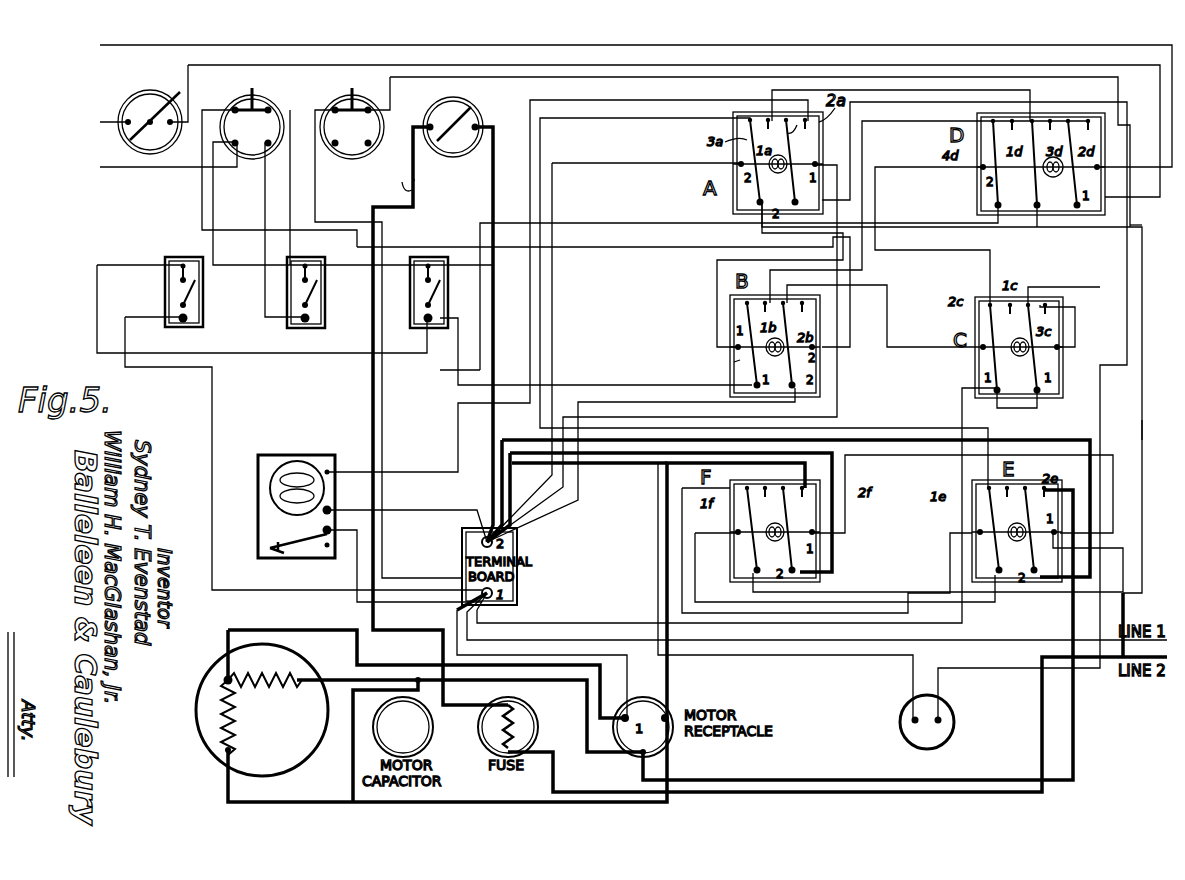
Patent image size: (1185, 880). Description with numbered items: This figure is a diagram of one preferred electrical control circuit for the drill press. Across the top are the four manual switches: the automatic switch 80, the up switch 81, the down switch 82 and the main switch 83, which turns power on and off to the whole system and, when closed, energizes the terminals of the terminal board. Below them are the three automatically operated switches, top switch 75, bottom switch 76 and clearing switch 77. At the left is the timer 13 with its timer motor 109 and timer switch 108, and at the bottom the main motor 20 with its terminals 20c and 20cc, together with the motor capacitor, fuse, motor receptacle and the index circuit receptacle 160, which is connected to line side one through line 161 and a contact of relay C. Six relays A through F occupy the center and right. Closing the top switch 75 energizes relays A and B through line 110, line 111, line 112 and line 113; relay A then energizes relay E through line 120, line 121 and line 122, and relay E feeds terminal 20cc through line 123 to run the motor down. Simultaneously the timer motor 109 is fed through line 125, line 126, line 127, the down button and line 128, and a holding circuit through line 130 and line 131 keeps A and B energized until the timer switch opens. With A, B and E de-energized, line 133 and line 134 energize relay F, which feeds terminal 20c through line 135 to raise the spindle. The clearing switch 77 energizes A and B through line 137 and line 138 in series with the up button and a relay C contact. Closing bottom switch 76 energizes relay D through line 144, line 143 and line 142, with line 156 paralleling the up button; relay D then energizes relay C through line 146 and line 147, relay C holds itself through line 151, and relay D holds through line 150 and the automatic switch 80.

The timer 13 is at (277, 511).
The main motor 20 is at (270, 709).
The motor terminal 20c is at (235, 750).
The motor terminal 20cc is at (300, 655).
The top switch 75 is at (169, 282).
The bottom switch 76 is at (316, 283).
The clearing switch 77 is at (430, 283).
The automatic switch 80 is at (143, 109).
The up switch 81 is at (241, 113).
The down switch 82 is at (341, 113).
The main switch 83 is at (486, 95).
The timer switch 108 is at (276, 556).
The timer motor 109 is at (272, 490).
The line 110 is at (294, 380).
The line 111 is at (636, 386).
The line 112 is at (734, 358).
The line 113 is at (710, 306).
The line 120 is at (1020, 90).
The line 121 is at (1058, 227).
The line 122 is at (914, 598).
The line 123 is at (1080, 732).
The line 125 is at (442, 456).
The line 126 is at (852, 154).
The line 127 is at (1126, 186).
The line 128 is at (388, 560).
The line 130 is at (916, 206).
The line 131 is at (811, 284).
The line 133 is at (915, 414).
The line 134 is at (980, 624).
The line 135 is at (548, 800).
The line 137 is at (960, 236).
The line 138 is at (362, 276).
The line 142 is at (1156, 156).
The line 143 is at (156, 167).
The line 144 is at (254, 270).
The line 146 is at (1120, 374).
The line 147 is at (905, 340).
The line 150 is at (1040, 55).
The line 151 is at (1092, 324).
The line 156 is at (264, 207).
The index circuit receptacle 160 is at (950, 700).
The line 161 is at (1140, 426).